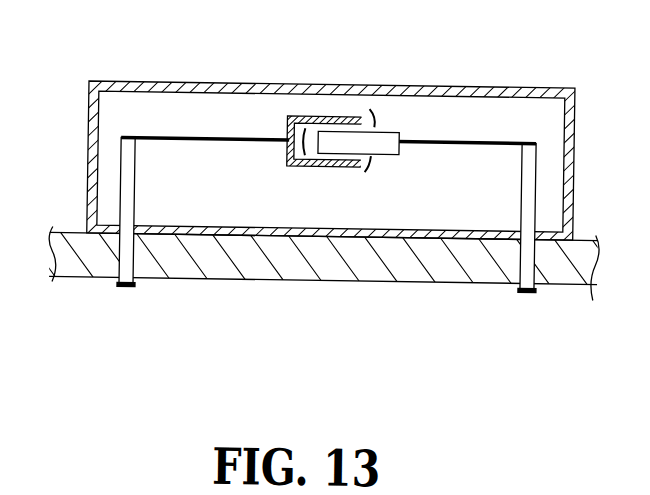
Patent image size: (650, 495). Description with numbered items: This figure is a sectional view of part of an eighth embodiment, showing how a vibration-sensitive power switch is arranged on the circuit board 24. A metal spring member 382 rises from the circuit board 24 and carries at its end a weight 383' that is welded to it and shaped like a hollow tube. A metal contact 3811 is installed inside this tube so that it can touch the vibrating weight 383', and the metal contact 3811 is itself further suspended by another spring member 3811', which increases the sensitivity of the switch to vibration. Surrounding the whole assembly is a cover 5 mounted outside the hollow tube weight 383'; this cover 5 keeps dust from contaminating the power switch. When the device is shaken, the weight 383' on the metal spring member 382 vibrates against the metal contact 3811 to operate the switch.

The cover 5 is at (530, 81).
The circuit board 24 is at (93, 265).
The metal spring member 382 is at (247, 134).
The weight 383' is at (327, 103).
The metal contact 3811 is at (373, 105).
The spring member 3811' is at (467, 90).